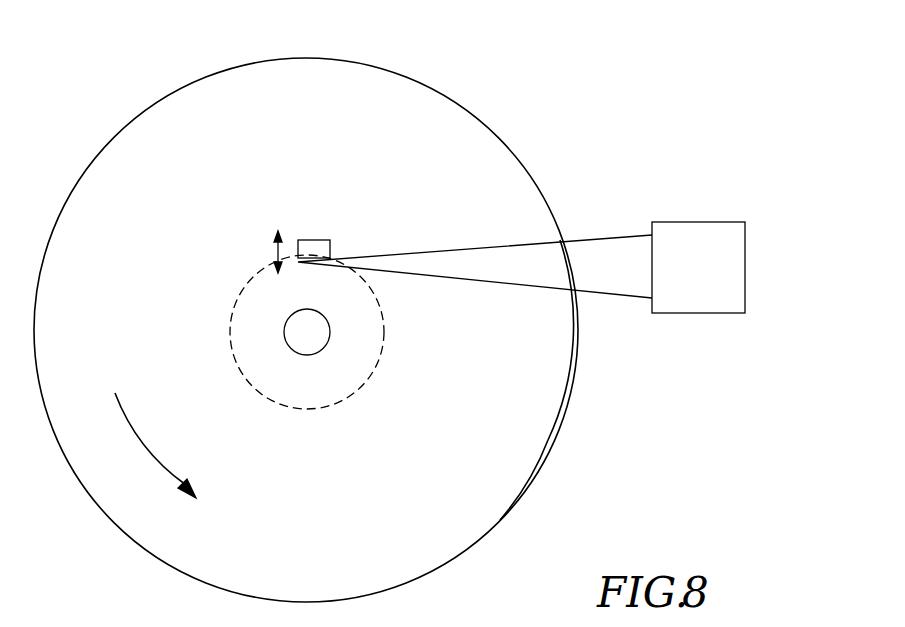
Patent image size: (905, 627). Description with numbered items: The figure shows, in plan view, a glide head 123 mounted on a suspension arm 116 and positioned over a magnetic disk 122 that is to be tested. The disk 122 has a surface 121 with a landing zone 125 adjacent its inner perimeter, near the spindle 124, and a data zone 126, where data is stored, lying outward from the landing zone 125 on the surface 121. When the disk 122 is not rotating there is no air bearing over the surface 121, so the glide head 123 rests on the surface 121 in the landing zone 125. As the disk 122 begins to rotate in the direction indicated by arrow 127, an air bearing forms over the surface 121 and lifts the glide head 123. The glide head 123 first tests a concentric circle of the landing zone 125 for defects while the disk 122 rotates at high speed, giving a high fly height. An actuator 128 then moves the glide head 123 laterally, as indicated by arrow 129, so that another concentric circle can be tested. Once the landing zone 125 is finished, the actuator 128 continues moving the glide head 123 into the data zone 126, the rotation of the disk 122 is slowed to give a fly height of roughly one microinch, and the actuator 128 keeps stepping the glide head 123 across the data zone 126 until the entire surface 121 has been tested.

The suspension arm 116 is at (606, 237).
The surface 121 is at (322, 543).
The magnetic disk 122 is at (571, 401).
The glide head 123 is at (330, 242).
The spindle 124 is at (330, 338).
The landing zone 125 is at (330, 398).
The data zone 126 is at (532, 467).
The arrow 127 is at (140, 443).
The actuator 128 is at (746, 290).
The arrow 129 is at (277, 255).